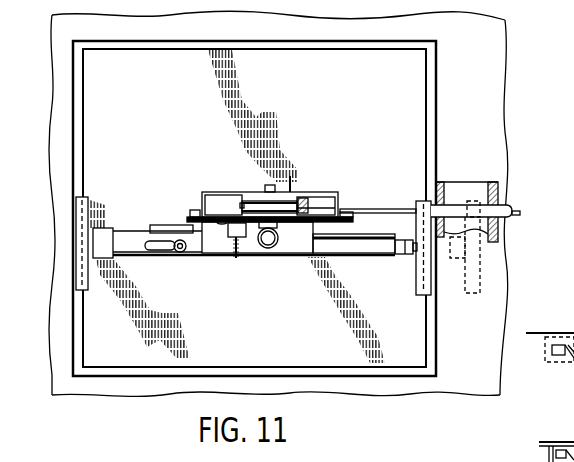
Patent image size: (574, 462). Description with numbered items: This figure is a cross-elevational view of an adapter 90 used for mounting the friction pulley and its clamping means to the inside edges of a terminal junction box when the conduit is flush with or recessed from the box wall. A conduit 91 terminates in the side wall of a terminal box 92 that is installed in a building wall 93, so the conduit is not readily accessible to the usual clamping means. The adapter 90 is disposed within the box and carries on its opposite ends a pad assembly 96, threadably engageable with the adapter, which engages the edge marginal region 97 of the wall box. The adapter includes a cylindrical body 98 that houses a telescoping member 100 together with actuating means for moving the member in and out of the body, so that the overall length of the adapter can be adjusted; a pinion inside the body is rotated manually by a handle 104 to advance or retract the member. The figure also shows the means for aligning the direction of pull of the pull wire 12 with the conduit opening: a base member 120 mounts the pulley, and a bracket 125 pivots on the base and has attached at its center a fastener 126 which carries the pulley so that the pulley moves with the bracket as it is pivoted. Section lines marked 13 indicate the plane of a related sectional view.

The pull wire 12 is at (270, 184).
The section line 13- 13 is at (143, 162).
The adapter 90 is at (312, 302).
The conduit 91 is at (505, 226).
The terminal box 92 is at (437, 86).
The wall 93 is at (476, 135).
The pad assembly 96 is at (88, 204).
The edge marginal region 97 is at (83, 146).
The cylindrical body 98 is at (143, 257).
The telescoping member 100 is at (398, 258).
The handle 104 is at (174, 256).
The base member 120 is at (219, 213).
The bracket 125 is at (327, 196).
The fastener 126 is at (292, 174).